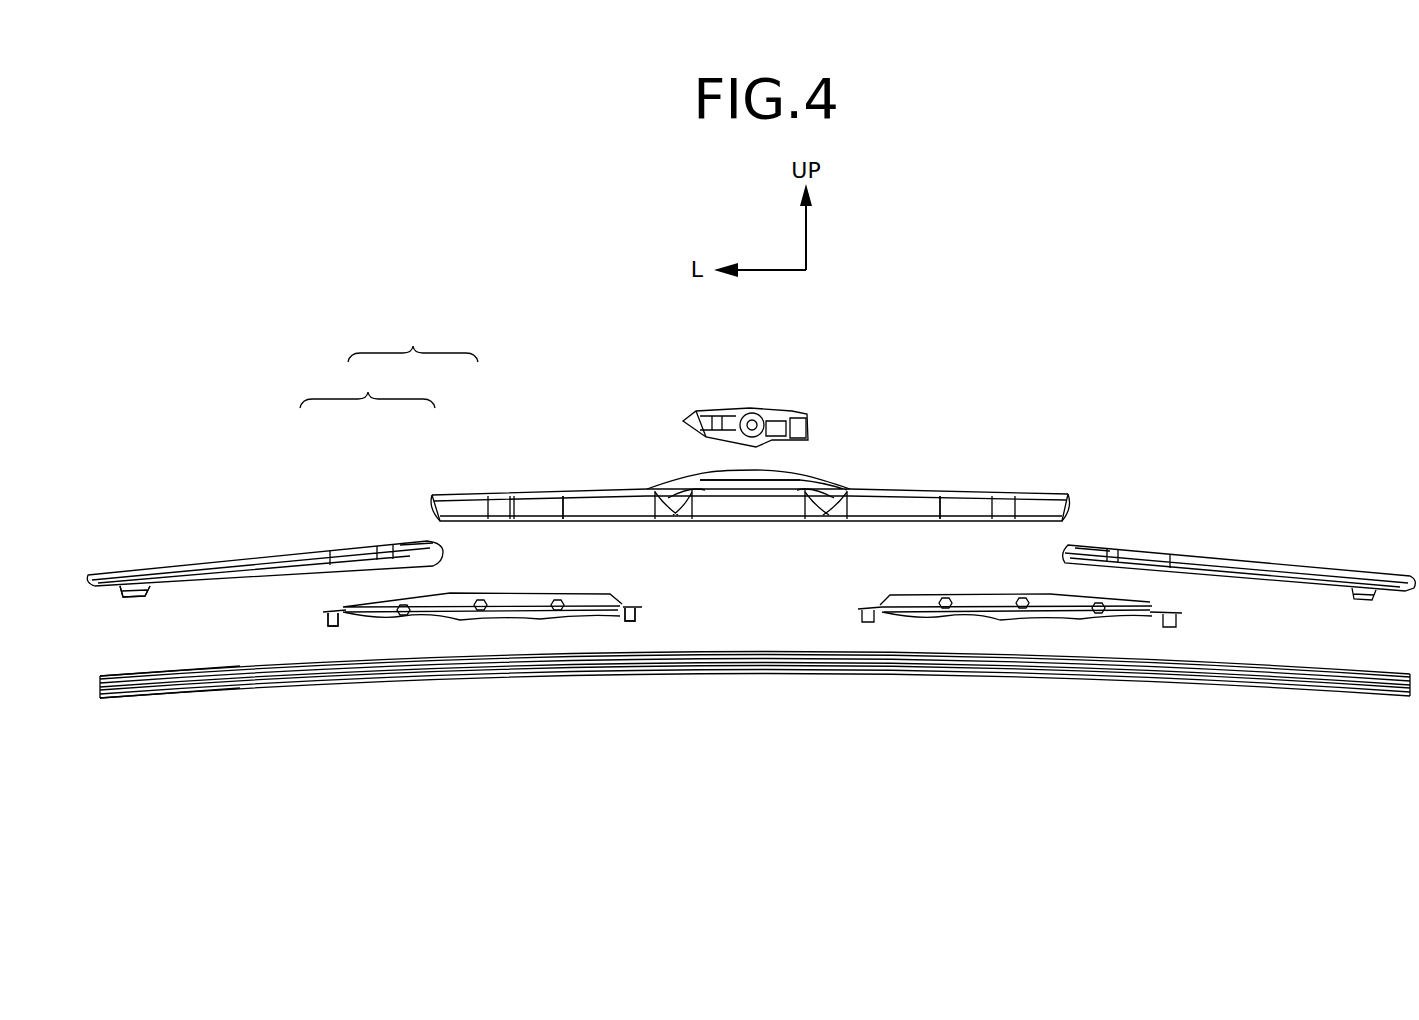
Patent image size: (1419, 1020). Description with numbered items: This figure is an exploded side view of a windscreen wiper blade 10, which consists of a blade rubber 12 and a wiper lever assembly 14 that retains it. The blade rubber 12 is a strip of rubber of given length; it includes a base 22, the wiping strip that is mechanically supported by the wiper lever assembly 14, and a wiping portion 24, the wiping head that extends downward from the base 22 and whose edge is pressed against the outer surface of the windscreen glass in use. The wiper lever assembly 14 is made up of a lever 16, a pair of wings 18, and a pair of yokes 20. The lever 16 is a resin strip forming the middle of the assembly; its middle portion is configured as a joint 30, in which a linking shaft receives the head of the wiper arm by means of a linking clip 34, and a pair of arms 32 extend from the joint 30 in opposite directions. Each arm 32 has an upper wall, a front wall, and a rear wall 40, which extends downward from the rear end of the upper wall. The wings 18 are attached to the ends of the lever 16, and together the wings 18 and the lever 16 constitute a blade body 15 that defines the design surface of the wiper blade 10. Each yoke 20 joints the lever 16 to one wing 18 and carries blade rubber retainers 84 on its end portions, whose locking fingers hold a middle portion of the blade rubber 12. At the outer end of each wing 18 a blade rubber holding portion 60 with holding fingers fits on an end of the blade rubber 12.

The windscreen wiper blade 10 is at (1160, 330).
The blade rubber 12 is at (128, 700).
The wiper lever assembly 14 is at (413, 340).
The blade body 15 is at (367, 386).
The lever 16 is at (449, 490).
The wing 18 is at (370, 538).
The yoke 20 is at (540, 586).
The base 22 is at (128, 674).
The wiping portion 24 is at (198, 692).
The joint 30 is at (753, 498).
The arm 32 is at (590, 500).
The linking clip 34 is at (758, 407).
The rear wall 40 is at (1046, 586).
The blade rubber holding portion 60 is at (130, 597).
The blade rubber retainer 84 is at (330, 620).